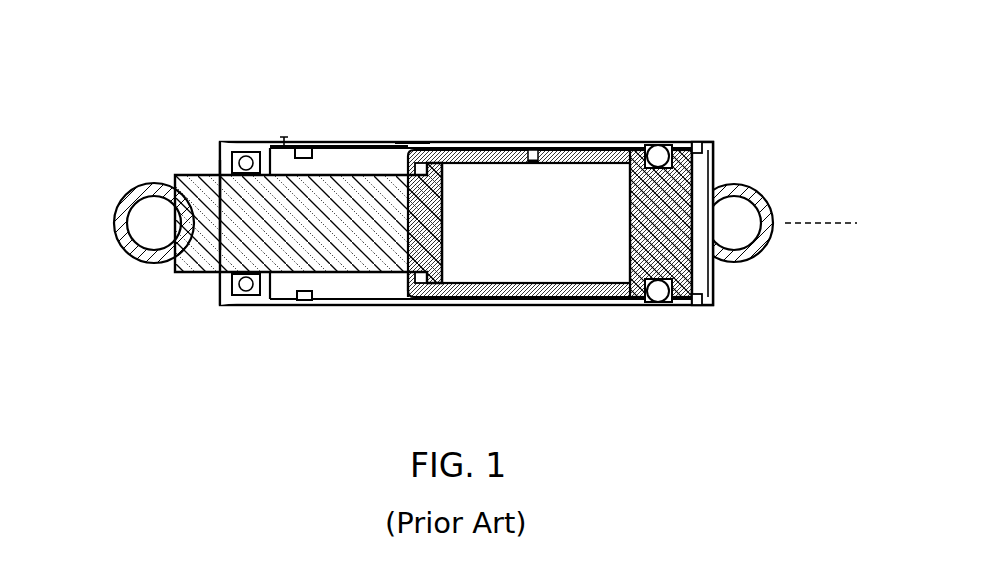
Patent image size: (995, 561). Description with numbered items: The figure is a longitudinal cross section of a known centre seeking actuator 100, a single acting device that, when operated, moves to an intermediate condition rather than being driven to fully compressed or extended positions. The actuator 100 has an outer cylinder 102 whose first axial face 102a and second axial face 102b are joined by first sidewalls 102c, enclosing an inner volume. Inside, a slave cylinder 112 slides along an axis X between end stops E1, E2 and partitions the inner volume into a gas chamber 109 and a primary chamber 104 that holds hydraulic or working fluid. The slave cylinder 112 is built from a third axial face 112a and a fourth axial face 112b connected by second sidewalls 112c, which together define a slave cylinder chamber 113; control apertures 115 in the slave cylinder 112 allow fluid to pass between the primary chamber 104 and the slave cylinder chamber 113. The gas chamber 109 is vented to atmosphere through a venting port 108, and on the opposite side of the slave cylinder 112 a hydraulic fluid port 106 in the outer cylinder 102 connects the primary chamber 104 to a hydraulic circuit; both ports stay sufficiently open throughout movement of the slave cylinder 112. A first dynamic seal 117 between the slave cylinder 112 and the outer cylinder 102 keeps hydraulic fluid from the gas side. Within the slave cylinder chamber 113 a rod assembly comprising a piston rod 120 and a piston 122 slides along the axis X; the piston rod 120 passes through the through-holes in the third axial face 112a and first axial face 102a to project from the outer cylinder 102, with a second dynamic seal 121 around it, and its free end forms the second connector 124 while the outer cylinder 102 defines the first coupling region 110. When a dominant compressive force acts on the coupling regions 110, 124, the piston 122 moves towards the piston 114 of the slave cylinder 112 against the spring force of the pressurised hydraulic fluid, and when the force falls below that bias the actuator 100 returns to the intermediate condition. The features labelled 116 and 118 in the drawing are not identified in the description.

The centre seeking actuator 100 is at (745, 100).
The outer cylinder 102 is at (468, 142).
The first axial face 102a is at (217, 298).
The second axial face 102b is at (718, 158).
The first sidewalls 102c is at (424, 142).
The primary chamber 104 is at (348, 145).
The hydraulic fluid port 106 is at (282, 139).
The venting port 108 is at (703, 310).
The gas chamber 109 is at (705, 273).
The first coupling region 110 is at (735, 195).
The slave cylinder 112 is at (487, 302).
The third axial face 112a is at (395, 148).
The fourth axial face 112b is at (693, 222).
The second sidewalls 112c is at (578, 300).
The slave cylinder chamber 113 is at (558, 273).
The piston of the slave cylinder 114 is at (645, 290).
The control apertures 115 is at (536, 148).
The cylinder wall section 116 is at (590, 148).
The first dynamic seal 117 is at (656, 145).
The cylinder end lip 118 is at (400, 284).
The piston rod 120 is at (272, 306).
The second dynamic seal 121 is at (218, 144).
The piston 122 is at (443, 232).
The second connector 124 is at (113, 223).
The end stop E1 is at (300, 147).
The end stop E2 is at (696, 148).
The axis X is at (829, 224).